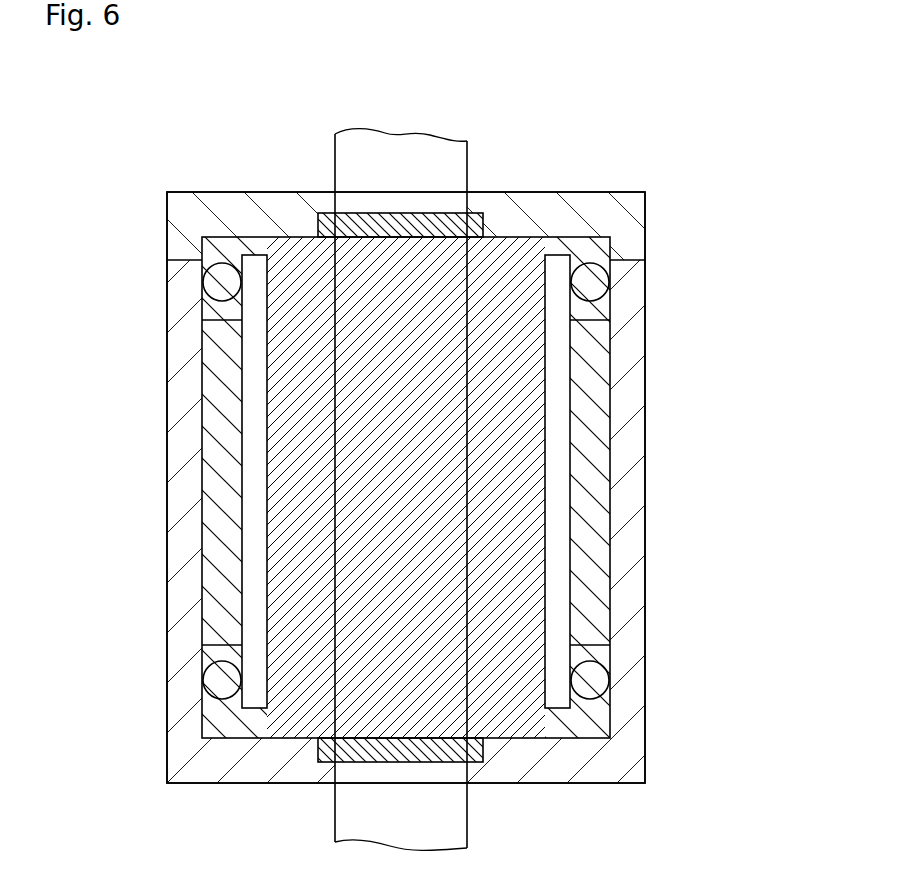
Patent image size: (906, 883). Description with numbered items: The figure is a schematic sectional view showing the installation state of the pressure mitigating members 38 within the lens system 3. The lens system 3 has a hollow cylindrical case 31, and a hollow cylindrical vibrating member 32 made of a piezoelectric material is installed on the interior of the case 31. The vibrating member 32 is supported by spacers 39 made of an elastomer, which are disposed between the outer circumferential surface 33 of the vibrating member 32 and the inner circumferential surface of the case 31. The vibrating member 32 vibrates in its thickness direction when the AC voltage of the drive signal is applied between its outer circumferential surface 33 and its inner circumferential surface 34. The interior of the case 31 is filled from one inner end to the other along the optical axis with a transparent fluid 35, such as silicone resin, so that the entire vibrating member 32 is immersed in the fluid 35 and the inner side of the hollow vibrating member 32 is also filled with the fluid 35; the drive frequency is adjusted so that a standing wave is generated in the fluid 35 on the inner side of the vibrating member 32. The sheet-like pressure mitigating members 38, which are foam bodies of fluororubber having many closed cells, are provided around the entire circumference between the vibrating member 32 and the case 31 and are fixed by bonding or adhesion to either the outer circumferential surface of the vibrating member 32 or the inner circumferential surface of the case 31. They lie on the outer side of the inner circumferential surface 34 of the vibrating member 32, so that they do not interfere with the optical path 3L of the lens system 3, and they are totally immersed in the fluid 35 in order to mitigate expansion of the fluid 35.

The lens system 3 is at (586, 149).
The optical path 3L is at (467, 163).
The case 31 is at (167, 335).
The vibrating member 32 is at (555, 530).
The outer circumferential surface 33 is at (540, 690).
The inner circumferential surface 34 is at (575, 648).
The fluid 35 is at (490, 595).
The pressure mitigating member 38 is at (597, 393).
The spacer 39 is at (592, 283).